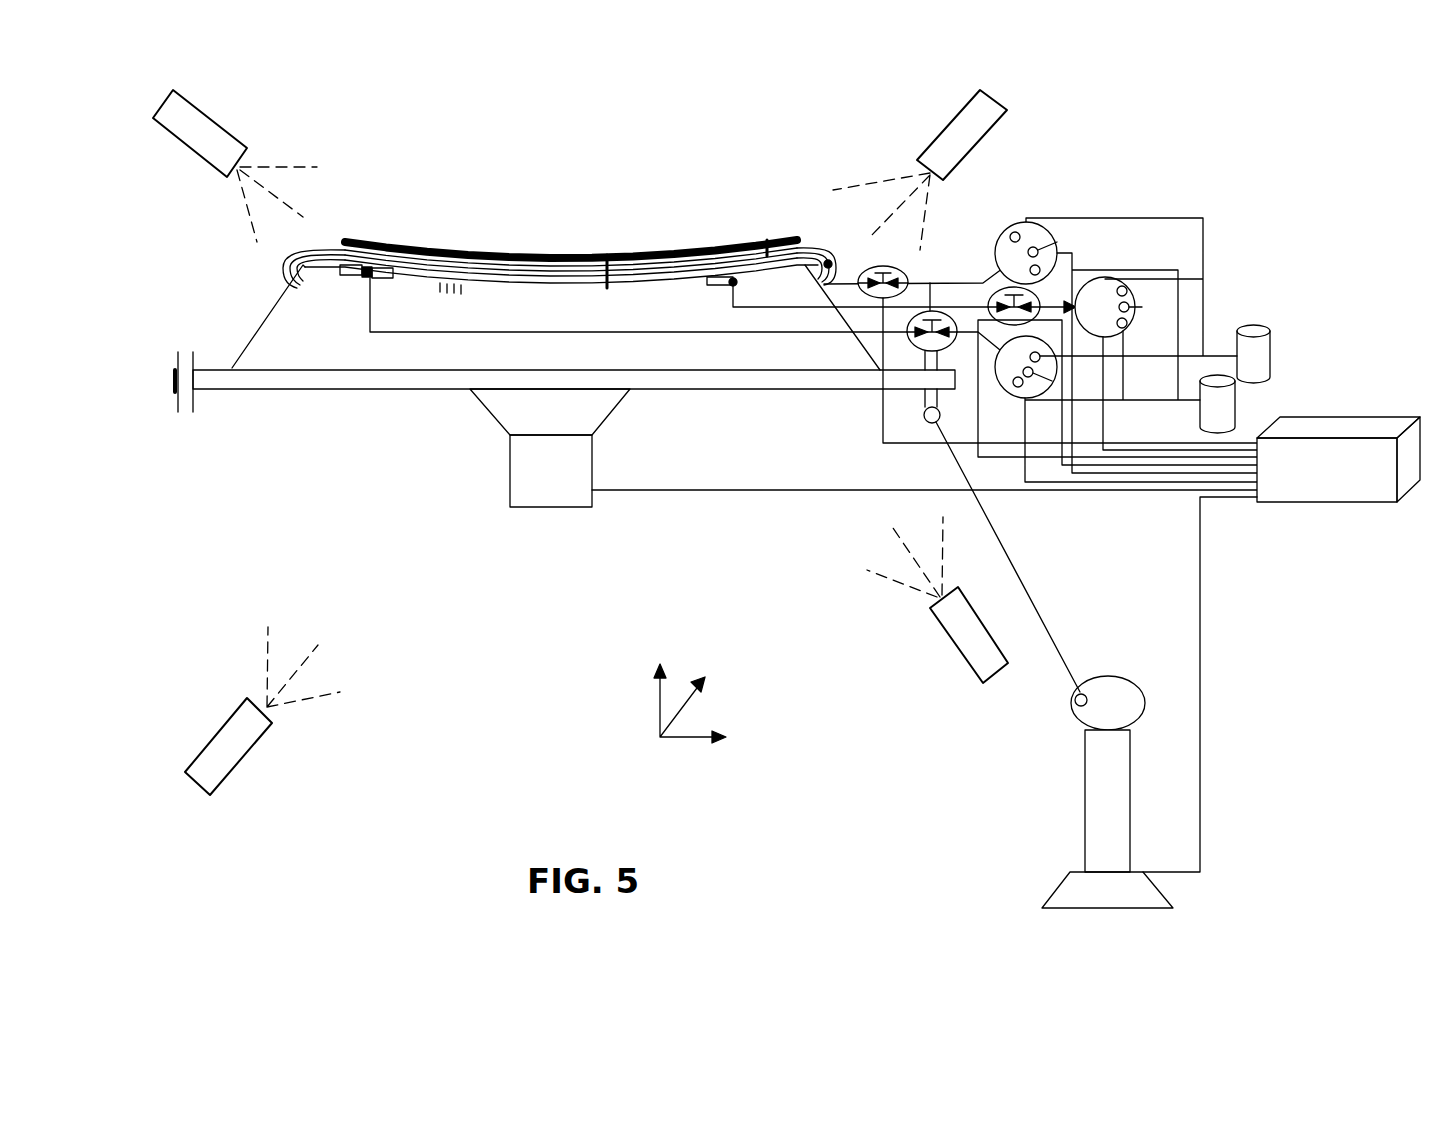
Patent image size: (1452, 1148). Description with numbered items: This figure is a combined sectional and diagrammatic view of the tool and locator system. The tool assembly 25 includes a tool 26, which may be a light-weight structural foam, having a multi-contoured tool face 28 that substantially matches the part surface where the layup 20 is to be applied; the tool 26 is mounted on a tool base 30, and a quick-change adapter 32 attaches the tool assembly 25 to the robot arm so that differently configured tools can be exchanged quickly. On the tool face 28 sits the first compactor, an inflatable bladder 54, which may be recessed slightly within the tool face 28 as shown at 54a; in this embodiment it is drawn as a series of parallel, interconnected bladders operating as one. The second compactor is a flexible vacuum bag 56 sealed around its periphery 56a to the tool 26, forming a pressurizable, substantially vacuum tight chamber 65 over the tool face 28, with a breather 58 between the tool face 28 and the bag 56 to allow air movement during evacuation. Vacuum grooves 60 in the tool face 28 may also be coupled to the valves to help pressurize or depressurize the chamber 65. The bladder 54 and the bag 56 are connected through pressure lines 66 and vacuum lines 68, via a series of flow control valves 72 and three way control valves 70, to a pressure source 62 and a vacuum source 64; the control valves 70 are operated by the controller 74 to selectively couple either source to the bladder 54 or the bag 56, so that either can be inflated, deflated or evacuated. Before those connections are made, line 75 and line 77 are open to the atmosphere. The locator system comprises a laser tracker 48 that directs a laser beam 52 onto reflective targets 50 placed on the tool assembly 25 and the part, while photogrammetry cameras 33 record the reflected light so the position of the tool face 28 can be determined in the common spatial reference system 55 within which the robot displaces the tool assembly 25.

The layup 20 is at (548, 250).
The tool assembly 25 is at (388, 203).
The tool 26 is at (383, 352).
The tool face 28 is at (607, 255).
The tool base 30 is at (325, 378).
The quick-change adapter 32 is at (510, 478).
The photogrammetry cameras 33 is at (208, 112).
The laser tracker 48 is at (1087, 797).
The reflective targets 50 is at (933, 423).
The laser beam 52 is at (1027, 582).
The bladder 54 is at (350, 274).
The recessed bladder position 54a is at (729, 286).
The spatial reference system 55 is at (626, 722).
The vacuum bag 56 is at (289, 248).
The bag periphery 56a is at (276, 292).
The breather 58 is at (290, 270).
The vacuum grooves 60 is at (450, 300).
The pressure source 62 is at (1273, 346).
The vacuum source 64 is at (1237, 398).
The chamber 65 is at (767, 240).
The pressure lines 66 is at (1225, 352).
The vacuum lines 68 is at (1153, 400).
The three way control valves 70 is at (1033, 223).
The flow control valves 72 is at (930, 287).
The controller 74 is at (1322, 505).
The line 75 is at (810, 307).
The line 77 is at (842, 283).